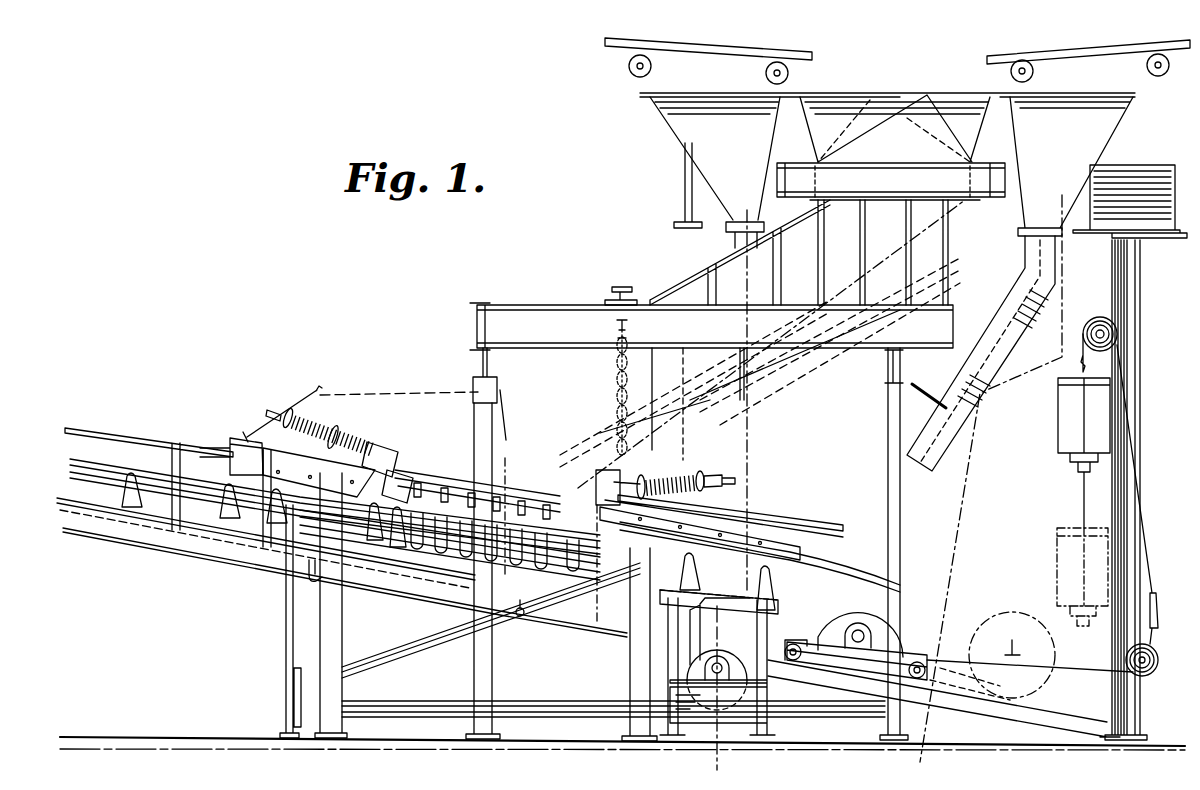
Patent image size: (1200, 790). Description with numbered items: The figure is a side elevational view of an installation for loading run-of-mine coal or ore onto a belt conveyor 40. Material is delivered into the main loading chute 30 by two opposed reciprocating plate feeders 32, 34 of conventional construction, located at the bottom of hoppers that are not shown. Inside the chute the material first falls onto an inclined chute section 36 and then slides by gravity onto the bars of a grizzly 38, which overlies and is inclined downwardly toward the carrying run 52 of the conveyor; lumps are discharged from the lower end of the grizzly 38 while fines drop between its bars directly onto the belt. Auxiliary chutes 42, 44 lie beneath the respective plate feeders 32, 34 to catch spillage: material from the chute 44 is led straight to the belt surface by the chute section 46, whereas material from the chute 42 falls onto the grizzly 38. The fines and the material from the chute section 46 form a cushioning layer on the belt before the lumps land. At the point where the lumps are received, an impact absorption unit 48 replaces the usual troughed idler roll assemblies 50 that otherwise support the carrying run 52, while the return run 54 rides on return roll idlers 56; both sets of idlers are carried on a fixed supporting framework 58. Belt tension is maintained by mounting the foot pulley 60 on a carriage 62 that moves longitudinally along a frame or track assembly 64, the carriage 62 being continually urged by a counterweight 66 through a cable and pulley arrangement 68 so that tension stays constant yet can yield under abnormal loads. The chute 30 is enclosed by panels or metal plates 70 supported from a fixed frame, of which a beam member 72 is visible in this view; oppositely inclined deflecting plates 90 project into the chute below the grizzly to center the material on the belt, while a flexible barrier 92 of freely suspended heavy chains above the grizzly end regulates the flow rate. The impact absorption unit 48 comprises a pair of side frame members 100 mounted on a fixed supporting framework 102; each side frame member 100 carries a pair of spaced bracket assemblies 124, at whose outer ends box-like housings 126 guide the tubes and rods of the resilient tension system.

The main loading chute 30 is at (878, 116).
The reciprocating plate feeder 32 is at (768, 48).
The reciprocating plate feeder 34 is at (1047, 50).
The inclined chute section 36 is at (884, 270).
The grizzly 38 is at (686, 412).
The belt conveyor 40 is at (205, 515).
The auxiliary chute 42 is at (682, 124).
The auxiliary chute 44 is at (1112, 128).
The chute section 46 is at (918, 435).
The impact absorption unit 48 is at (447, 557).
The troughed idler roll assemblies 50 is at (116, 498).
The carrying run 52 is at (805, 580).
The return run 54 is at (228, 556).
The return roll idlers 56 is at (313, 584).
The fixed supporting framework 58 is at (105, 540).
The foot pulley 60 is at (902, 600).
The carriage 62 is at (848, 658).
The frame or track assembly 64 is at (962, 698).
The counterweight 66 is at (1062, 430).
The cable and pulley arrangement 68 is at (1167, 574).
The panels or metal plates 70 is at (391, 395).
The beam 72 is at (539, 297).
The deflecting plates 90 is at (242, 458).
The flexible barrier 92 is at (608, 384).
The side frame members 100 is at (355, 476).
The fixed supporting framework 102 is at (630, 661).
The bracket assemblies 124 is at (393, 490).
The box-like housing 126 is at (390, 450).